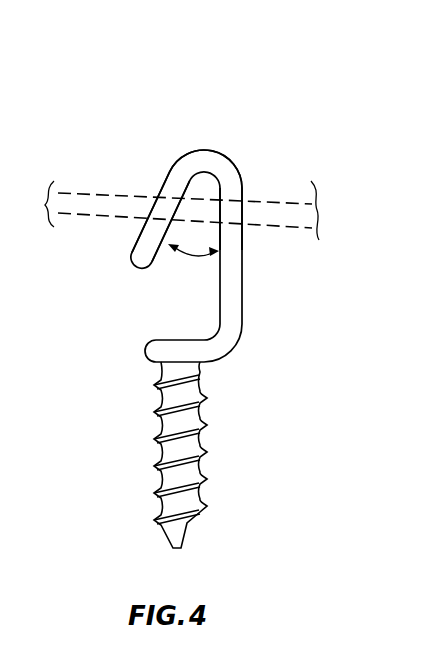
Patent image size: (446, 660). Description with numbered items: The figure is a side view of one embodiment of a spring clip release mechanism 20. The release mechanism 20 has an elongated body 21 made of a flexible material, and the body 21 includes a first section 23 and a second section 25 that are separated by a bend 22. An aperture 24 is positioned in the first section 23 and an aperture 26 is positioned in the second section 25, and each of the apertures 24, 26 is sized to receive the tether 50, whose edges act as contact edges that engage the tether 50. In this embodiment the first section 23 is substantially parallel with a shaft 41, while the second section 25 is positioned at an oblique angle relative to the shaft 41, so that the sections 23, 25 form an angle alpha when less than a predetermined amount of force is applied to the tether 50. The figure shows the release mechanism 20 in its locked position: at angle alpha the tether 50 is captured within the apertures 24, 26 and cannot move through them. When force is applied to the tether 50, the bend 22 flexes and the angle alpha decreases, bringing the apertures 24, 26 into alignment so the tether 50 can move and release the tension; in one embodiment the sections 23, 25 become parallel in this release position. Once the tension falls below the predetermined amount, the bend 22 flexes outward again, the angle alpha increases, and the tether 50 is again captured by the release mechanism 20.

The spring clip release mechanism 20 is at (174, 121).
The elongated body 21 is at (233, 298).
The bend 22 is at (203, 163).
The first section 23 is at (238, 190).
The aperture 24 is at (234, 221).
The second section 25 is at (178, 183).
The aperture 26 is at (158, 229).
The shaft 41 is at (183, 446).
The tether 50 is at (288, 208).